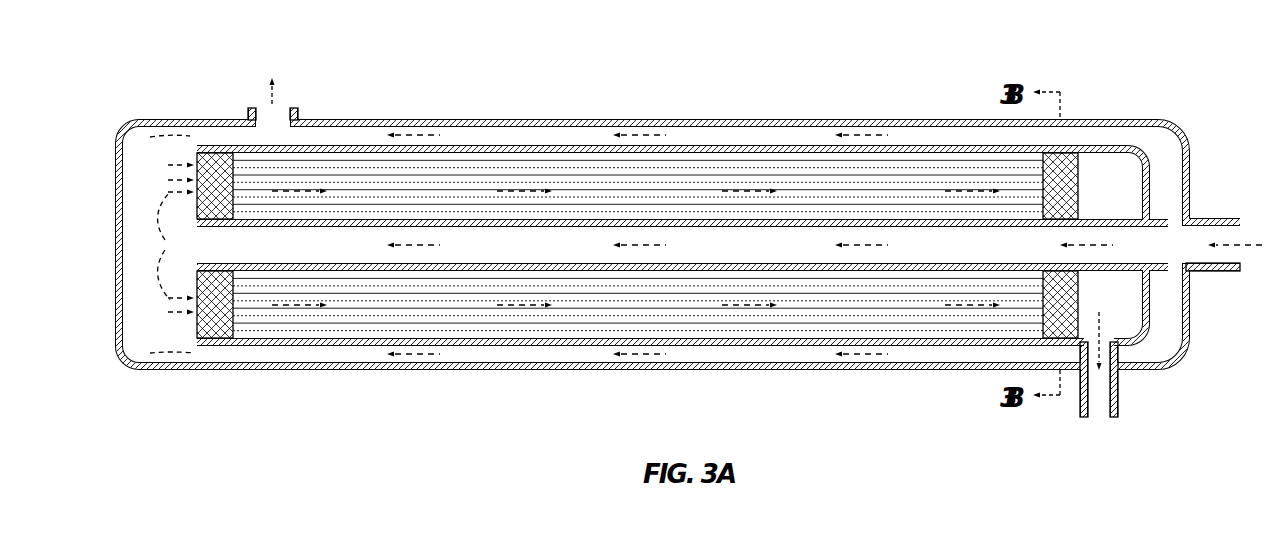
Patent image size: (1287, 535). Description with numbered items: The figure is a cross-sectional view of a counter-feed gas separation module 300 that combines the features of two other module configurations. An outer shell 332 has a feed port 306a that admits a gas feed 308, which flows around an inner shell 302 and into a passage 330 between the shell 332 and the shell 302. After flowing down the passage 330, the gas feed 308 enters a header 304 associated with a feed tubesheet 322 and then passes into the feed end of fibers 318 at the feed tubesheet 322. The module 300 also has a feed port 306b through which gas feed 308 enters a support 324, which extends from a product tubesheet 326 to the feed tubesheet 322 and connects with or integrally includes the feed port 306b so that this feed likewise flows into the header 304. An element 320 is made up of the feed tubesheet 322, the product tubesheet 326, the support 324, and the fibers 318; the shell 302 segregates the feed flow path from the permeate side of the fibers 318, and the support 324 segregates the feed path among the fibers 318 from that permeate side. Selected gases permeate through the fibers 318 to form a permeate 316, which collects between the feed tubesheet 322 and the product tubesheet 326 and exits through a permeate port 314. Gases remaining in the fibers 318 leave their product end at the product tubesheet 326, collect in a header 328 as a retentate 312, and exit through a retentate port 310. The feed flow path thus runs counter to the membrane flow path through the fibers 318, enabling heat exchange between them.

The gas separation module 300 is at (140, 84).
The shell 302 is at (635, 147).
The header 304 is at (145, 243).
The feed port 306a is at (1210, 272).
The feed port 306b is at (1157, 270).
The gas feed 308 is at (1247, 243).
The retentate port 310 is at (1118, 378).
The retentate 312 is at (1101, 328).
The permeate port 314 is at (296, 113).
The permeate 316 is at (265, 98).
The fibers 318 is at (470, 175).
The element 320 is at (188, 164).
The feed tubesheet 322 is at (197, 322).
The support 324 is at (936, 228).
The product tubesheet 326 is at (1080, 163).
The header 328 is at (1120, 190).
The passage 330 is at (735, 130).
The shell 332 is at (560, 122).